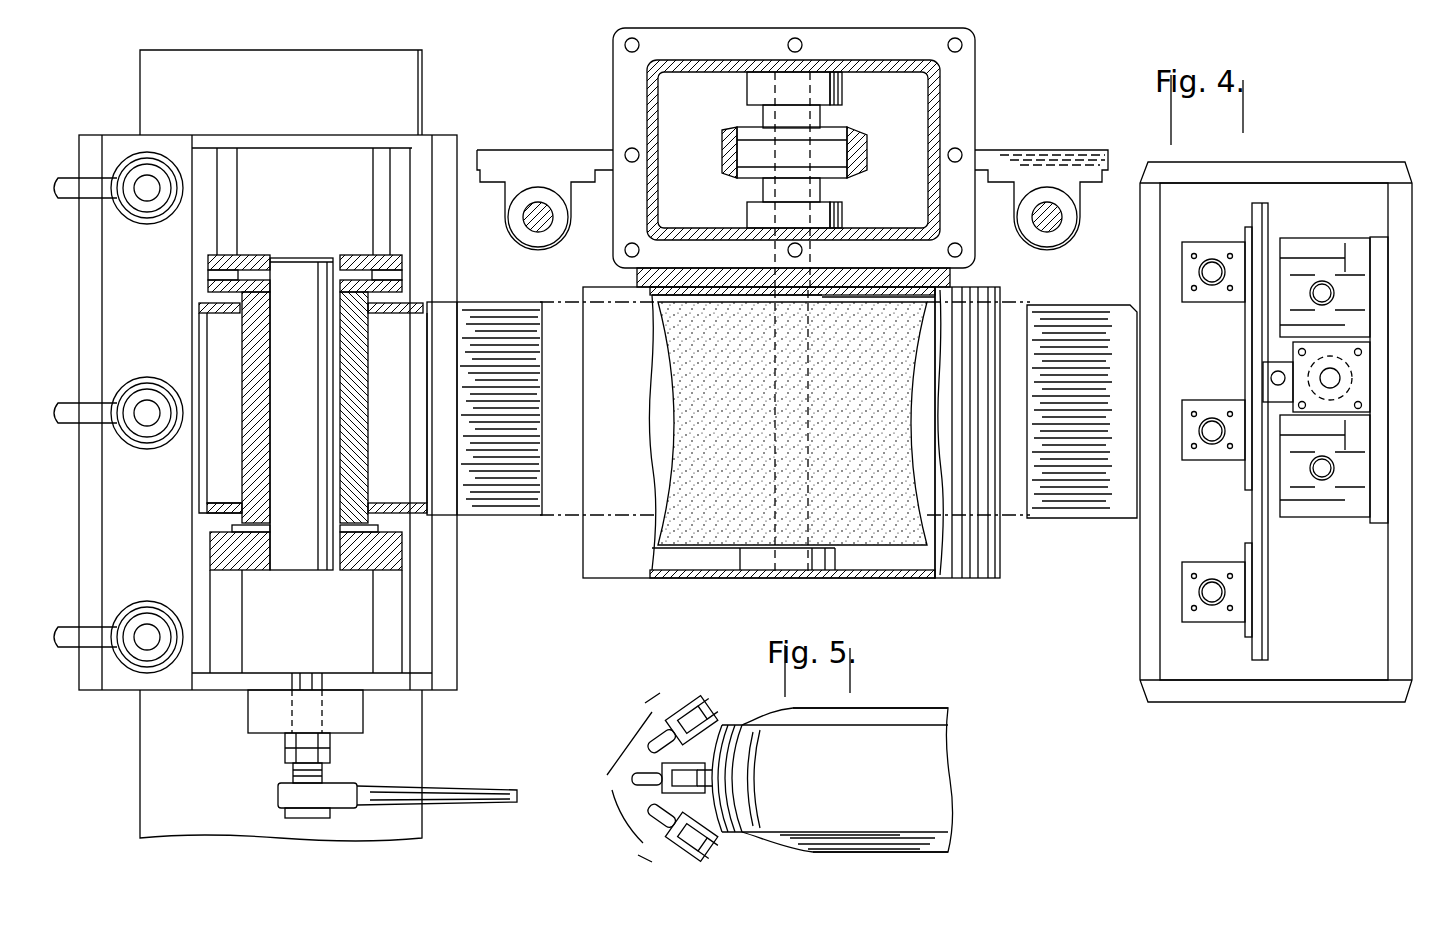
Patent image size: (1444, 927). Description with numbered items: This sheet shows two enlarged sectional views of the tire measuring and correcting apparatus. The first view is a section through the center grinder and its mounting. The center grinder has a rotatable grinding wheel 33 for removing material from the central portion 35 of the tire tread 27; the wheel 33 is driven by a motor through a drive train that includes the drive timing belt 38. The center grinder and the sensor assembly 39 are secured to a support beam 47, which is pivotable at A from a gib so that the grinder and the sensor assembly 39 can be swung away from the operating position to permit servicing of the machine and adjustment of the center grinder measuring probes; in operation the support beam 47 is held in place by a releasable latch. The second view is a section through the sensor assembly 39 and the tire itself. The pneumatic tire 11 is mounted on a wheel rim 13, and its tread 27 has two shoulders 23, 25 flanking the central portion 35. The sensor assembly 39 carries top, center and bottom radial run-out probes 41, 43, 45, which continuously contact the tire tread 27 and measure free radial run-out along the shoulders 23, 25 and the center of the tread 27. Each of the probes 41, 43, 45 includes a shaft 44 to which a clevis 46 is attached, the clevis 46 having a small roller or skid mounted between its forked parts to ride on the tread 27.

In FIG. 4, the drive timing belt 38 is at (867, 150).
In FIG. 4, the rotatable grinding wheel 33 is at (690, 425).
In FIG. 4, the support beam 47 is at (493, 508).
In FIG. 4, the sensor assembly 39 is at (1312, 220).
In FIG. 4, the pivot point A is at (300, 553).
In FIG. 5, the clevis 46 is at (686, 695).
In FIG. 5, the shoulder 23 is at (735, 725).
In FIG. 5, the wheel rim 13 is at (922, 708).
In FIG. 5, the top radial run-out probe 41 is at (693, 733).
In FIG. 5, the central portion 35 is at (717, 782).
In FIG. 5, the tread 27 is at (918, 790).
In FIG. 5, the shaft 44 is at (613, 777).
In FIG. 5, the center radial run-out probe 43 is at (688, 793).
In FIG. 5, the shoulder 25 is at (736, 835).
In FIG. 5, the bottom radial run-out probe 45 is at (692, 852).
In FIG. 5, the pneumatic tire 11 is at (815, 853).